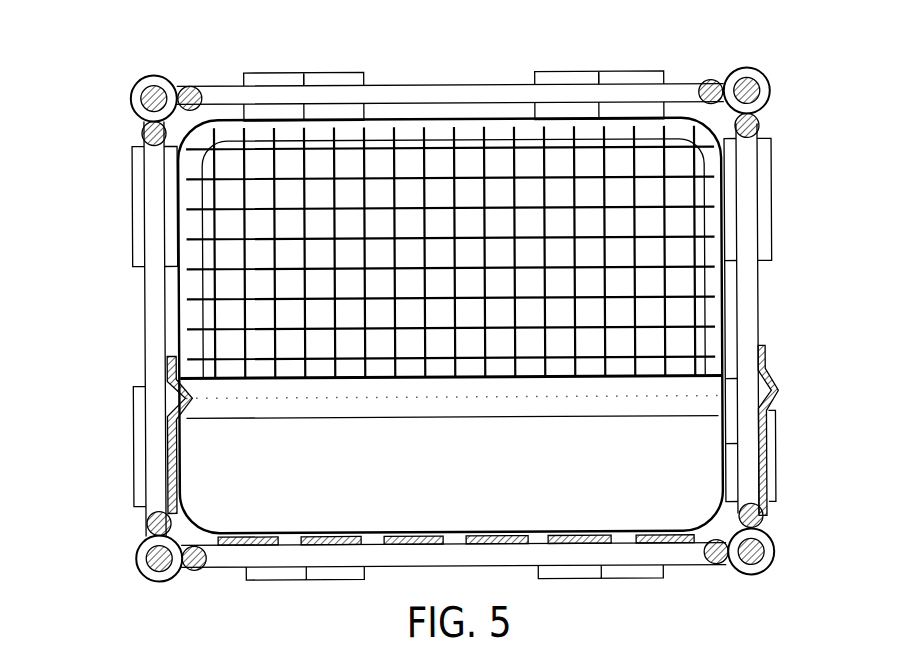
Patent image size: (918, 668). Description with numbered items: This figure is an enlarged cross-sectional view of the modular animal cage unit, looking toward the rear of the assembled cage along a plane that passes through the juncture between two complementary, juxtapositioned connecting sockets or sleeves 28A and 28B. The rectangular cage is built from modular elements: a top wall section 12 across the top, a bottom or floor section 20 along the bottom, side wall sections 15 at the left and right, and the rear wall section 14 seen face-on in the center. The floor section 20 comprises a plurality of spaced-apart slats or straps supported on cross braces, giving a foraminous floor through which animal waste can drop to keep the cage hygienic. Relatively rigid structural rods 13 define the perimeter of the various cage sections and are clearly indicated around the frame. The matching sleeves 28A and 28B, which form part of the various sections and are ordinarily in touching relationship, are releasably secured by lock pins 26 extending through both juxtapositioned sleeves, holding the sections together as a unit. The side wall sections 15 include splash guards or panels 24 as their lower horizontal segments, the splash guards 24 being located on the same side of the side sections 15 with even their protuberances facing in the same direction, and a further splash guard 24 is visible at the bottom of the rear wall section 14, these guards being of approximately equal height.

The top wall section 12 is at (443, 78).
The structural rods 13 is at (483, 90).
The rear wall section 14 is at (547, 267).
The side wall sections 15 is at (140, 319).
The floor section 20 is at (496, 526).
The splash guards 24 is at (290, 481).
The lock pins 26 is at (145, 104).
The connecting socket or sleeve 28A is at (140, 84).
The complementary connecting socket or sleeve 28B is at (336, 82).